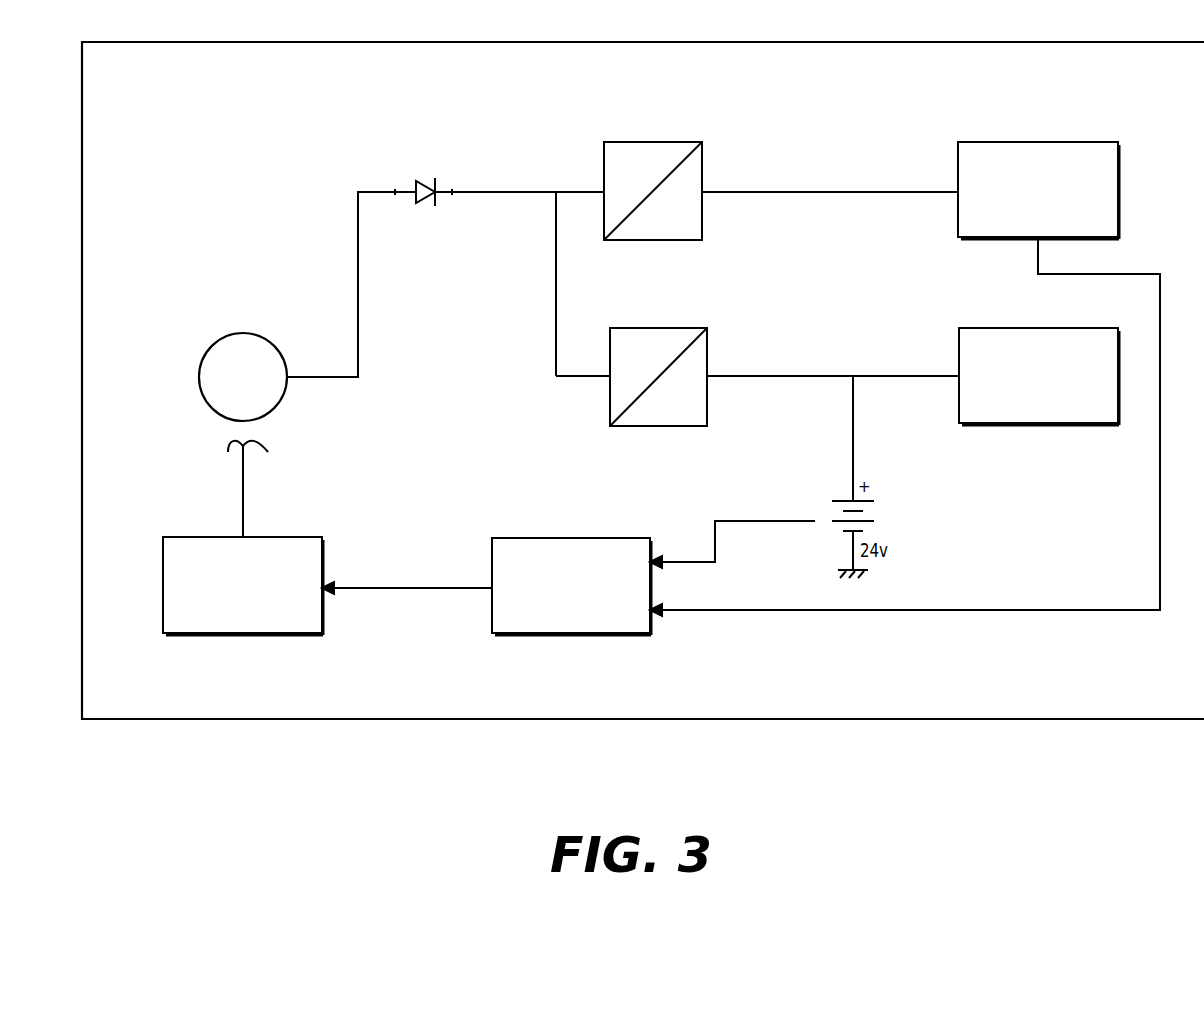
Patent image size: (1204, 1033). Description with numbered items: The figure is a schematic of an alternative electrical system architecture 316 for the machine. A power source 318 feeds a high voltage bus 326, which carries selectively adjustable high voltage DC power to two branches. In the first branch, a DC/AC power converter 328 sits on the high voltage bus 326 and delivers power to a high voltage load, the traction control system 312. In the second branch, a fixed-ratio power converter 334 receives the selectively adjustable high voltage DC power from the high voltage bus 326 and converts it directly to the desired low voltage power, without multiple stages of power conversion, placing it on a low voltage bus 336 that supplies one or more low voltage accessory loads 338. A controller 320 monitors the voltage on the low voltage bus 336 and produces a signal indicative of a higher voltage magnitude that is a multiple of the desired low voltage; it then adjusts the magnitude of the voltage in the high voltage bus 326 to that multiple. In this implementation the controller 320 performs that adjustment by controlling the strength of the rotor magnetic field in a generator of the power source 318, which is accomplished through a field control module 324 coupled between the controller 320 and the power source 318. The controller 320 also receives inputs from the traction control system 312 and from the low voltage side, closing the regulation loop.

The traction control system 312 is at (1067, 142).
The electrical system architecture 316 is at (384, 720).
The power source 318 is at (200, 398).
The controller 320 is at (613, 634).
The field control module 324 is at (300, 537).
The high voltage bus 326 is at (578, 191).
The DC/AC power converter 328 is at (702, 148).
The fixed-ratio power converter 334 is at (707, 331).
The low voltage bus 336 is at (812, 376).
The low voltage accessory load 338 is at (997, 328).